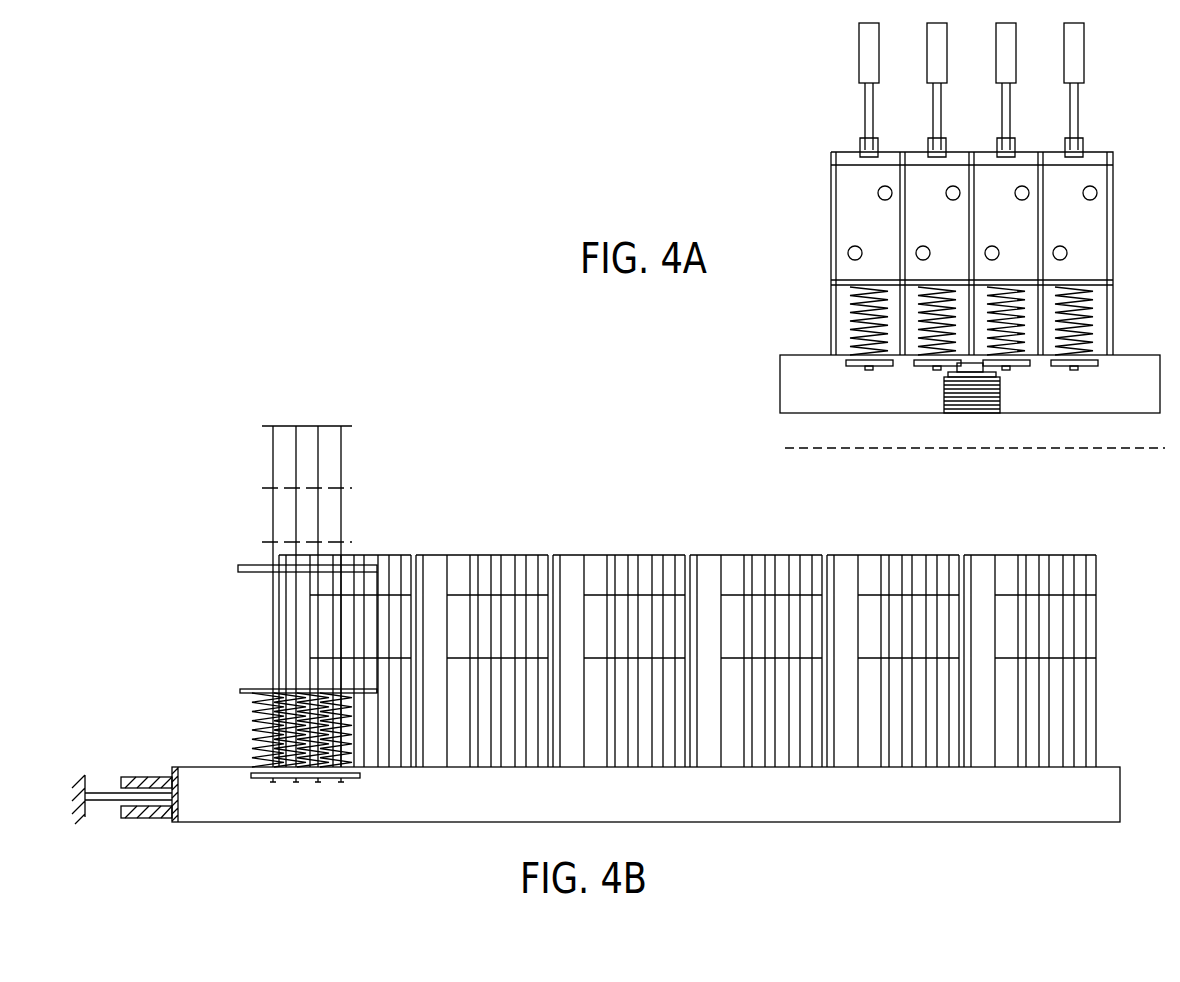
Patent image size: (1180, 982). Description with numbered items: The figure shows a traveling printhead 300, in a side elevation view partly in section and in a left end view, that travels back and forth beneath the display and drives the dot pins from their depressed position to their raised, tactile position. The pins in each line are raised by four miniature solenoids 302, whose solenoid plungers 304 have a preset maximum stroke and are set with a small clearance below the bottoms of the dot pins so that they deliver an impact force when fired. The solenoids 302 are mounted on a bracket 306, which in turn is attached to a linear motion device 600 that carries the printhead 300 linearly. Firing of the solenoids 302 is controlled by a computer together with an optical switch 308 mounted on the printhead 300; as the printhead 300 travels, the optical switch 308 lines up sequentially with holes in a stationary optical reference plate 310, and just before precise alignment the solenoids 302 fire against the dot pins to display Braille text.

In FIG. 4B, the traveling printhead 300 is at (578, 638).
In FIG. 4A, the miniature solenoids 302 is at (1085, 217).
In FIG. 4A, the solenoid plungers 304 is at (1085, 53).
In FIG. 4A, the bracket 306 is at (1130, 355).
In FIG. 4B, the bracket 306 is at (760, 553).
In FIG. 4A, the optical switch 308 is at (1000, 393).
In FIG. 4B, the optical switch 308 is at (143, 777).
In FIG. 4B, the optical reference plate 310 is at (105, 797).
In FIG. 4A, the linear motion device 600 is at (975, 432).